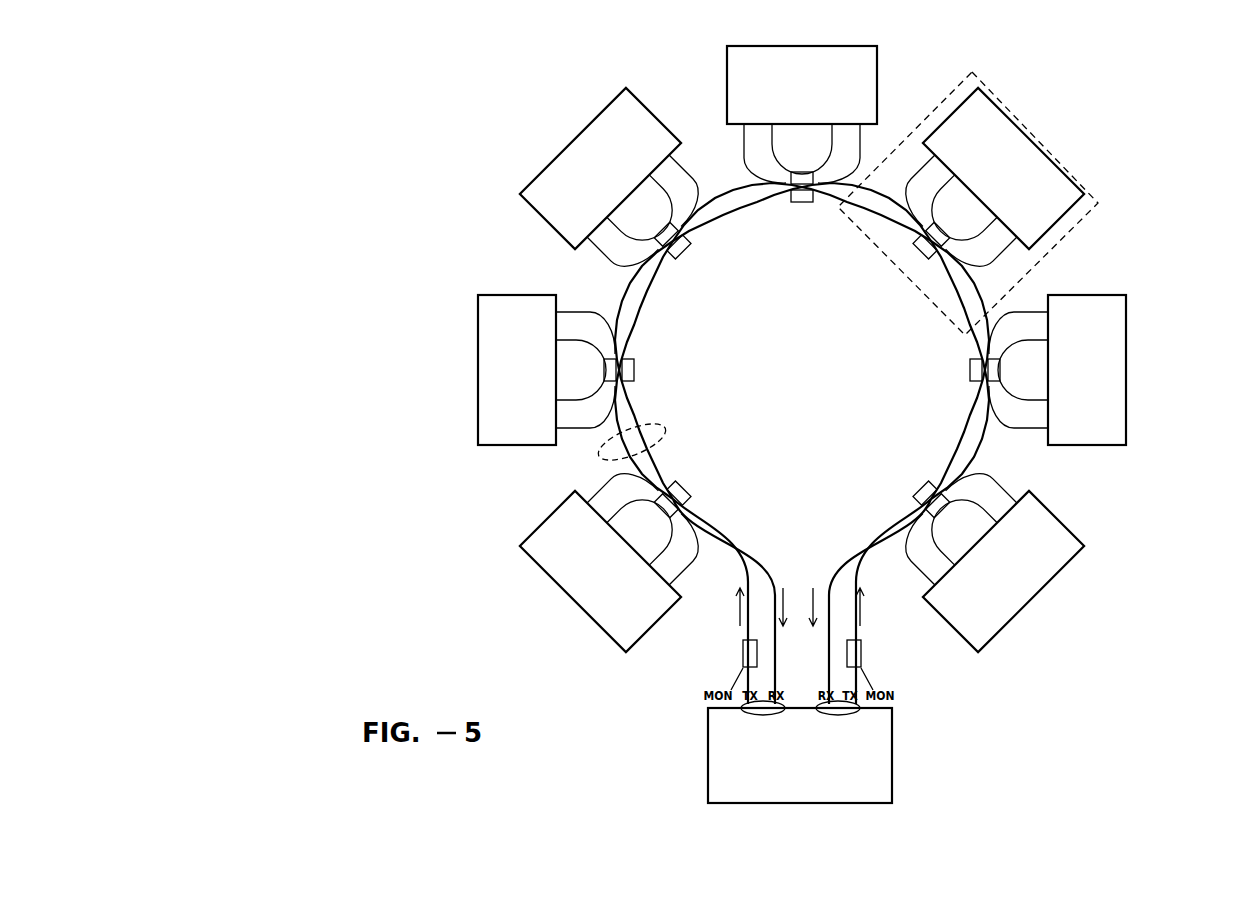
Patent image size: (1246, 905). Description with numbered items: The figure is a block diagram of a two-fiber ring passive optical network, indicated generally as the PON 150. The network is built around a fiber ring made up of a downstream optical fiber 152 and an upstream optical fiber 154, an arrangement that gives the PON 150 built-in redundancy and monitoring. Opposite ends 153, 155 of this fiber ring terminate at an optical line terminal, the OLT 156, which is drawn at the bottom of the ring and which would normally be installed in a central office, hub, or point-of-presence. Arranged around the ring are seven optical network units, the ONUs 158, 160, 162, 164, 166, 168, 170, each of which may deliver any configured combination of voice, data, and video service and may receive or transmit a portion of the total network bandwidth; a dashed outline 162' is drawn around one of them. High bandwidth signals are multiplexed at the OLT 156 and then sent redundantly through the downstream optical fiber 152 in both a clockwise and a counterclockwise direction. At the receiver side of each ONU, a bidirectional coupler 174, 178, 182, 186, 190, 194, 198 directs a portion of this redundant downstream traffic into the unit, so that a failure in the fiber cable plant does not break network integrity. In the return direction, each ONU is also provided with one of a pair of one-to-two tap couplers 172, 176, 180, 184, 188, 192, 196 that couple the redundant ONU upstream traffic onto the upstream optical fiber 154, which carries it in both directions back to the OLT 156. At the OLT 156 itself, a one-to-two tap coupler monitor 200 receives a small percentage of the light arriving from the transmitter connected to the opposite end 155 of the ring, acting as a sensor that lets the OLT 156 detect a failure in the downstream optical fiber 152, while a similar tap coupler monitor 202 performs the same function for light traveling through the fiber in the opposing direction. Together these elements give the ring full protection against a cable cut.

The passive optical network 150 is at (317, 132).
The downstream optical fiber 152 is at (727, 547).
The end of the fiber ring 153 is at (707, 714).
The upstream optical fiber 154 is at (770, 550).
The opposite end of the fiber ring 155 is at (1003, 709).
The optical line terminal 156 is at (708, 745).
The optical network unit 158 is at (1034, 603).
The optical network unit 160 is at (1126, 410).
The optical network unit 162 is at (1011, 189).
The ONU location (dashed) 162' is at (1004, 203).
The optical network unit 164 is at (878, 60).
The optical network unit 166 is at (526, 212).
The optical network unit 168 is at (484, 444).
The optical network unit 170 is at (598, 630).
The 1:2 tap coupler 172 is at (915, 496).
The bidirectional coupler 174 is at (935, 482).
The 1:2 tap coupler 176 is at (969, 371).
The bidirectional coupler 178 is at (974, 396).
The 1:2 tap coupler 180 is at (912, 275).
The bidirectional coupler 182 is at (882, 244).
The 1:2 tap coupler 184 is at (798, 205).
The bidirectional coupler 186 is at (788, 192).
The 1:2 tap coupler 188 is at (682, 262).
The bidirectional coupler 190 is at (700, 238).
The 1:2 tap coupler 192 is at (637, 373).
The bidirectional coupler 194 is at (634, 360).
The 1:2 tap coupler 196 is at (693, 490).
The bidirectional coupler 198 is at (657, 474).
The 1:2 tap coupler monitor 200 is at (742, 654).
The tap coupler monitor 202 is at (860, 651).